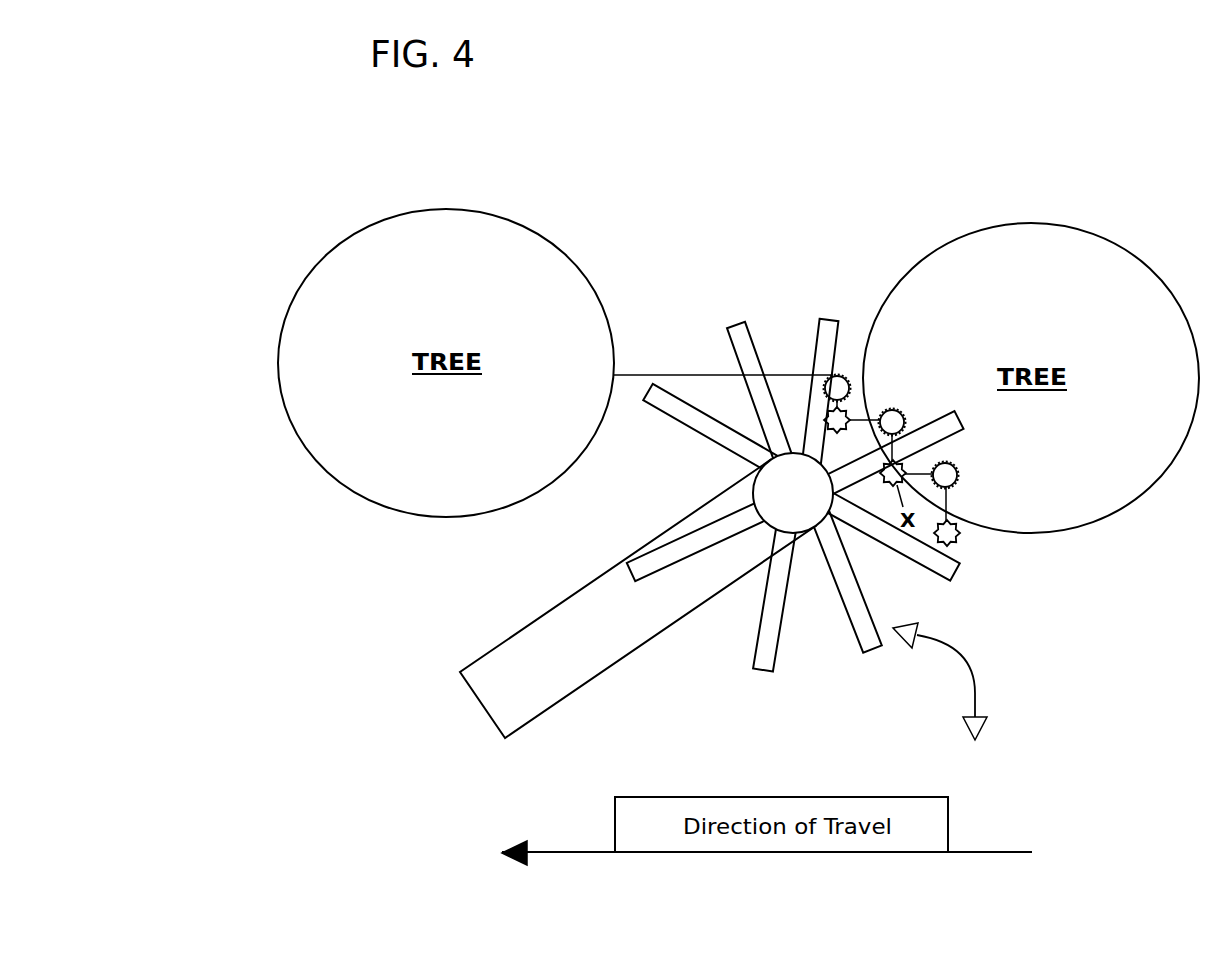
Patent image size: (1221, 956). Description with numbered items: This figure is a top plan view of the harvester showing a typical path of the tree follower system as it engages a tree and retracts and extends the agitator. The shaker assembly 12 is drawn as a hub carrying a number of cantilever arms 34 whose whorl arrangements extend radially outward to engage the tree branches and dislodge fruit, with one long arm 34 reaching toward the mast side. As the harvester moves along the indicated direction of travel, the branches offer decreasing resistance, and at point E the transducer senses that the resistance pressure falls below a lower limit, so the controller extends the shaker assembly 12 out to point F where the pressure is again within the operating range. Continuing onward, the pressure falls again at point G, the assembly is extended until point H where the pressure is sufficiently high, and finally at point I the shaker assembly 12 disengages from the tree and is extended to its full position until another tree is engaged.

The shaker assembly 12 is at (712, 440).
The cantilever arm 34 is at (620, 652).
The point E is at (958, 523).
The point F is at (958, 465).
The point G is at (903, 410).
The point H is at (842, 418).
The point I is at (847, 383).